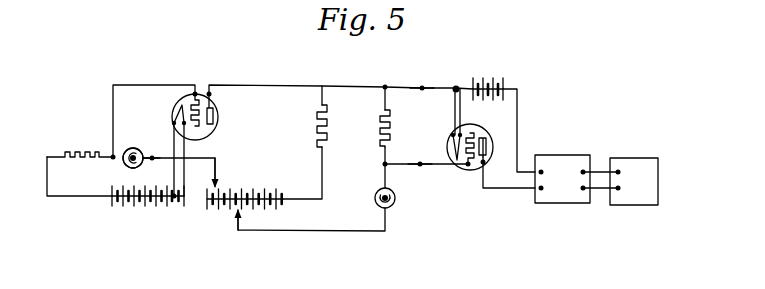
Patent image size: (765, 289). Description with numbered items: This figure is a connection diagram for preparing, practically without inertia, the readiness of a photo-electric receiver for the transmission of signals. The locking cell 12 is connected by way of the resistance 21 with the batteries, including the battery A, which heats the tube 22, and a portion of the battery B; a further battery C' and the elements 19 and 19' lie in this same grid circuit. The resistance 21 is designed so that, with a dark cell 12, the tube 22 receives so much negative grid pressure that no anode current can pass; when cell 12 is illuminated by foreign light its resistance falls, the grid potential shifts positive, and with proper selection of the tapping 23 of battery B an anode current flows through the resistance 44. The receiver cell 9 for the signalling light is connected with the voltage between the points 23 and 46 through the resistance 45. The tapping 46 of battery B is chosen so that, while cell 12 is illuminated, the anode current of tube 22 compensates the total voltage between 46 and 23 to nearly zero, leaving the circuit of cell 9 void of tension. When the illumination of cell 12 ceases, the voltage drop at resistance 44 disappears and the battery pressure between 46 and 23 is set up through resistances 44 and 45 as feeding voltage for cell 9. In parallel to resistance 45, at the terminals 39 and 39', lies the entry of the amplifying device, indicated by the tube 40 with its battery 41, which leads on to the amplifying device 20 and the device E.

The resistance 21 is at (94, 151).
The indicating device 19 is at (127, 149).
The locking cell 12 is at (135, 149).
The junction 19' is at (158, 148).
The tube 22 is at (215, 114).
The tapping 23 is at (217, 180).
The resistance 44 is at (317, 121).
The resistance 45 is at (380, 121).
The terminal 39 is at (425, 77).
The terminal 39' is at (412, 177).
The receiver cell 9 is at (375, 197).
The tube 40 is at (487, 134).
The battery 41 is at (498, 82).
The tapping 46 is at (237, 224).
The amplifying device 20 is at (576, 179).
The load device E is at (634, 181).
The battery A is at (181, 208).
The battery B is at (248, 210).
The grid battery C' is at (138, 209).